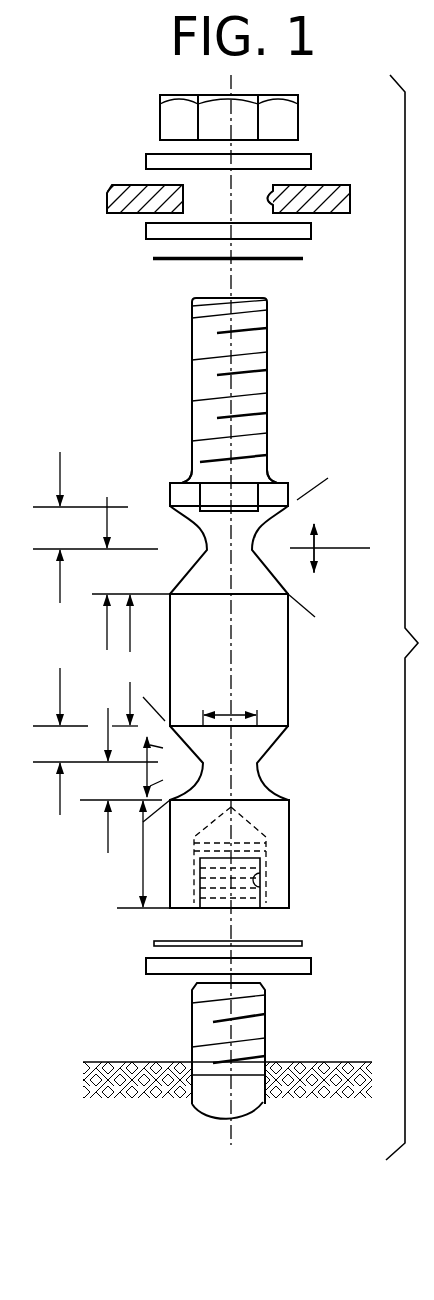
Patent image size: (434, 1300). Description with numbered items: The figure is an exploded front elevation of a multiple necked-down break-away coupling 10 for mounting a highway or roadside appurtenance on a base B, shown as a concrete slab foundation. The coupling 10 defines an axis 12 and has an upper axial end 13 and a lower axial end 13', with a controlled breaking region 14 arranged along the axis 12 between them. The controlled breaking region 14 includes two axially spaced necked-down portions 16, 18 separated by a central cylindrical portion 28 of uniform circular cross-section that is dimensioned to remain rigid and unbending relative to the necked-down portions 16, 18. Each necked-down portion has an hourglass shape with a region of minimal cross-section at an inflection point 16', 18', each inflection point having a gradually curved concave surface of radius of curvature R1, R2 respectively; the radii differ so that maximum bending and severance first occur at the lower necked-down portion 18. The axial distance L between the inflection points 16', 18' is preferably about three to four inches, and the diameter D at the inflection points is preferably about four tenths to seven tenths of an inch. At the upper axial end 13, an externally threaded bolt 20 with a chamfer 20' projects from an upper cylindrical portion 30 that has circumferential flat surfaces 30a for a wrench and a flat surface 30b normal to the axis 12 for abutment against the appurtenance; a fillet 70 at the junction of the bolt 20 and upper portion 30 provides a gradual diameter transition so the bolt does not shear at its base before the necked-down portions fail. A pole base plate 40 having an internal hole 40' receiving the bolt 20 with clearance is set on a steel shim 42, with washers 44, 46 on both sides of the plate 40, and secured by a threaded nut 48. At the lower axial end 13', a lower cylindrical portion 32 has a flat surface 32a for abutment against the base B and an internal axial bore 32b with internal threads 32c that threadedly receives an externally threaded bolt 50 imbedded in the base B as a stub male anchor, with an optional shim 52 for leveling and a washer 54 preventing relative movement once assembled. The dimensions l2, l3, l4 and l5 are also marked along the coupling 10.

The multiple necked-down break-away coupling 10 is at (97, 641).
The axis 12 is at (227, 1035).
The upper axial end 13 is at (139, 358).
The lower axial end 13' is at (115, 929).
The controlled breaking region 14 is at (331, 477).
The upper necked-down portion 16 is at (201, 528).
The upper inflection point 16' is at (177, 564).
The lower necked-down portion 18 is at (271, 762).
The lower inflection point 18' is at (304, 771).
The externally threaded bolt 20 is at (207, 390).
The chamfer 20' is at (268, 291).
The central cylindrical portion 28 is at (283, 658).
The upper cylindrical portion 30 is at (282, 483).
The circumferential flat surface 30a is at (223, 490).
The flat surface 30b is at (273, 476).
The lower cylindrical portion 32 is at (282, 890).
The flat surface 32a is at (279, 908).
The internal axial bore 32b is at (244, 866).
The internal threads 32c is at (256, 879).
The pole base plate 40 is at (211, 178).
The internal hole 40' is at (325, 176).
The steel shim 42 is at (303, 258).
The washer 44 is at (146, 231).
The washer 46 is at (311, 160).
The threaded nut 48 is at (175, 118).
The externally threaded bolt 50 is at (200, 1019).
The shim 52 is at (302, 943).
The washer 54 is at (147, 962).
The fillet 70 is at (190, 475).
The base B is at (328, 1062).
The axial distance L is at (125, 660).
The diameter D is at (232, 714).
The radius of curvature R1 is at (262, 557).
The radius of curvature R2 is at (269, 752).
The length l2 is at (95, 527).
The length l3 is at (131, 573).
The length l4 is at (95, 741).
The length l5 is at (121, 780).